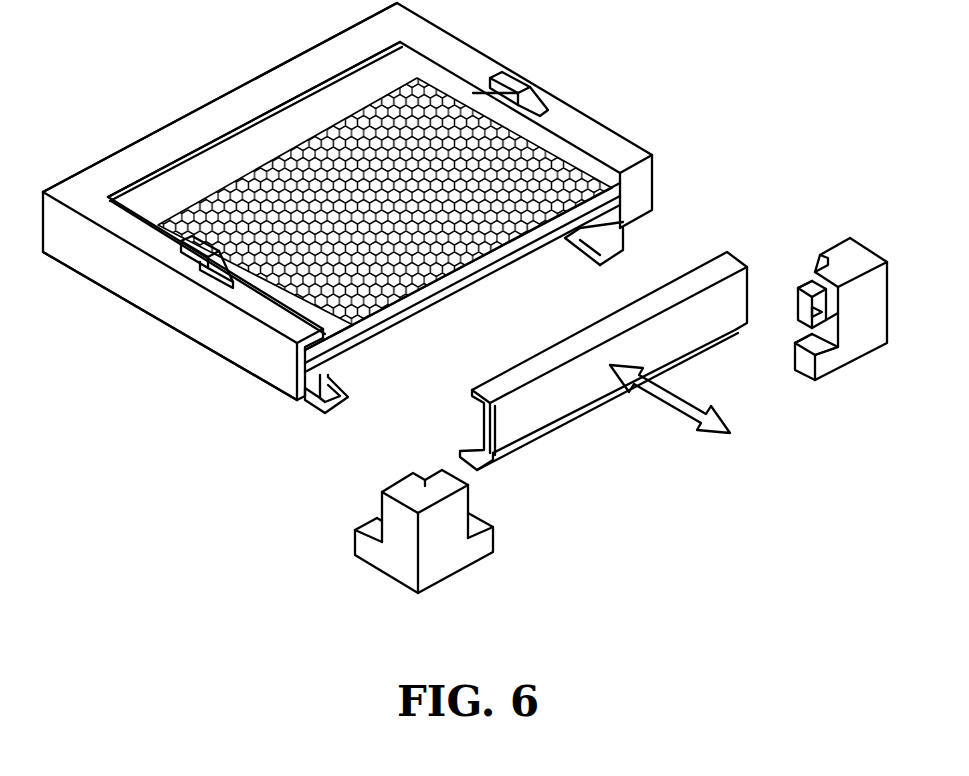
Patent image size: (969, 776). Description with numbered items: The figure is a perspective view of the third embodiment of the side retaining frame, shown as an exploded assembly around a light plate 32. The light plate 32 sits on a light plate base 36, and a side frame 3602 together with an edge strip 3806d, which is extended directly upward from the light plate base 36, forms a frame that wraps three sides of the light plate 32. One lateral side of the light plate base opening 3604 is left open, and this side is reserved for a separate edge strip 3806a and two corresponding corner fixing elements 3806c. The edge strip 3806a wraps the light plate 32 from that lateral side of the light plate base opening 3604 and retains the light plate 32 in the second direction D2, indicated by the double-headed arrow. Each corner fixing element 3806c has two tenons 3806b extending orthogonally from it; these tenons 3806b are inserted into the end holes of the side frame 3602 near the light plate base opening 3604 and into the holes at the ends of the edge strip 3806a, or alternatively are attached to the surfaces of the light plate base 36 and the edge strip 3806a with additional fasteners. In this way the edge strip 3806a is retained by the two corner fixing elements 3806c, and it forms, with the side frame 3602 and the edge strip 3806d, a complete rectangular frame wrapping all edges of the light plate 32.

The light plate base 36 is at (112, 310).
The light plate 32 is at (515, 167).
The side frame 3602 is at (240, 352).
The light plate base opening 3604 is at (477, 318).
The edge strip 3806a is at (533, 427).
The tenon 3806b is at (812, 282).
The corner fixing element 3806c is at (848, 350).
The edge strip 3806d is at (230, 102).
The second direction D2 is at (670, 399).